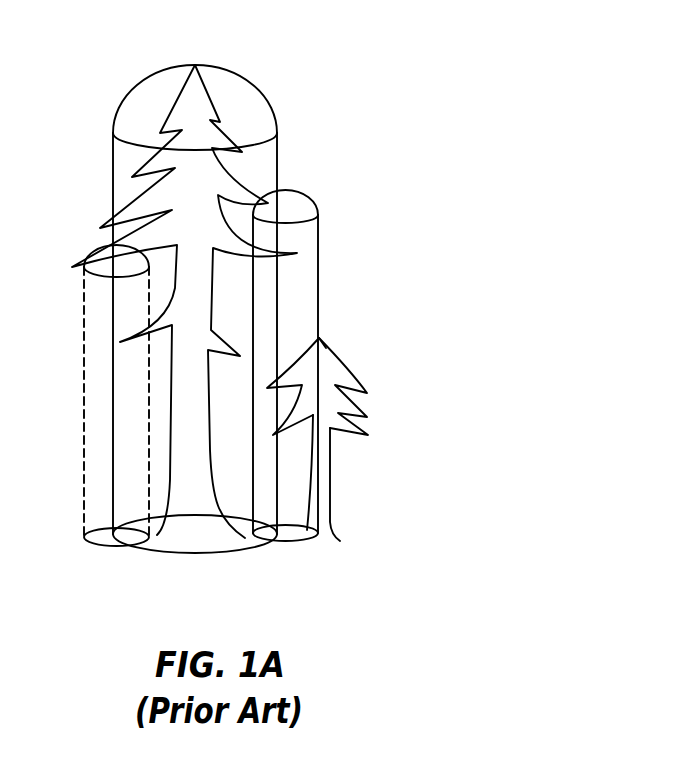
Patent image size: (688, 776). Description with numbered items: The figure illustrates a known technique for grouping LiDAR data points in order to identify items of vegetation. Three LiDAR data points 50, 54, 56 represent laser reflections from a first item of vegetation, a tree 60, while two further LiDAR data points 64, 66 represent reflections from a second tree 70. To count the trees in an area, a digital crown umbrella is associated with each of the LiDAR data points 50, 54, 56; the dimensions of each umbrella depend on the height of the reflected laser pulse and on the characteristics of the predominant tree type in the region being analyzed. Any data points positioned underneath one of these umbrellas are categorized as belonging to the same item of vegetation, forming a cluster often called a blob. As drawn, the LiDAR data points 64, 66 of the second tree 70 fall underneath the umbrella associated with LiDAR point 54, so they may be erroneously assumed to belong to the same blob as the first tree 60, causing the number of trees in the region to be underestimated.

The LiDAR data point 50 is at (195, 65).
The LiDAR data point 54 is at (269, 203).
The LiDAR data point 56 is at (120, 250).
The first item of vegetation 60 is at (197, 532).
The LiDAR data point 64 is at (337, 442).
The LiDAR data point 66 is at (319, 340).
The second tree 70 is at (325, 530).